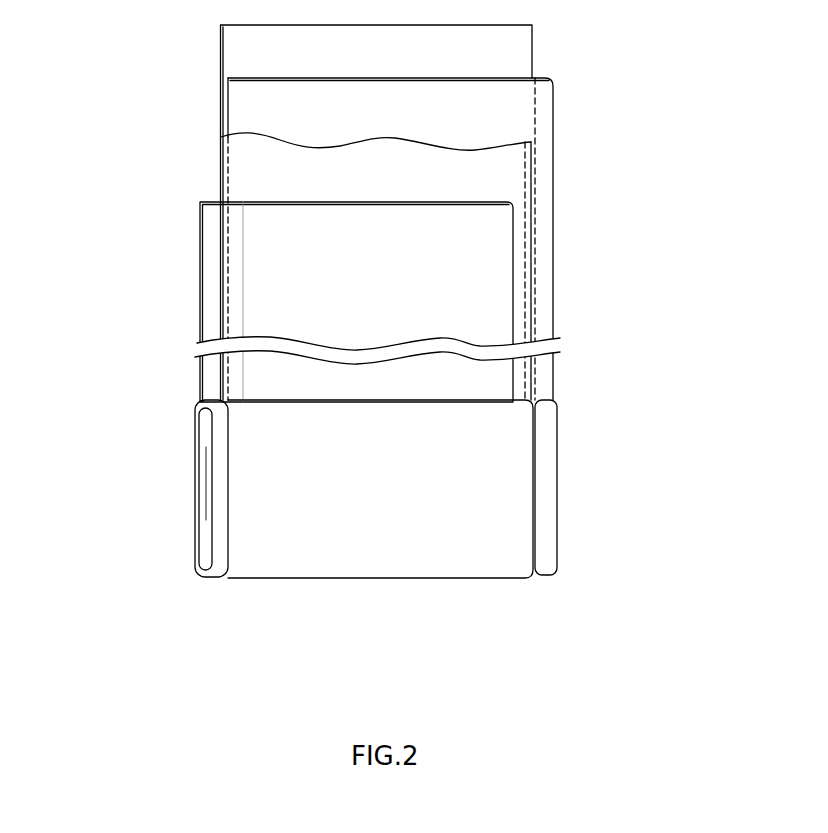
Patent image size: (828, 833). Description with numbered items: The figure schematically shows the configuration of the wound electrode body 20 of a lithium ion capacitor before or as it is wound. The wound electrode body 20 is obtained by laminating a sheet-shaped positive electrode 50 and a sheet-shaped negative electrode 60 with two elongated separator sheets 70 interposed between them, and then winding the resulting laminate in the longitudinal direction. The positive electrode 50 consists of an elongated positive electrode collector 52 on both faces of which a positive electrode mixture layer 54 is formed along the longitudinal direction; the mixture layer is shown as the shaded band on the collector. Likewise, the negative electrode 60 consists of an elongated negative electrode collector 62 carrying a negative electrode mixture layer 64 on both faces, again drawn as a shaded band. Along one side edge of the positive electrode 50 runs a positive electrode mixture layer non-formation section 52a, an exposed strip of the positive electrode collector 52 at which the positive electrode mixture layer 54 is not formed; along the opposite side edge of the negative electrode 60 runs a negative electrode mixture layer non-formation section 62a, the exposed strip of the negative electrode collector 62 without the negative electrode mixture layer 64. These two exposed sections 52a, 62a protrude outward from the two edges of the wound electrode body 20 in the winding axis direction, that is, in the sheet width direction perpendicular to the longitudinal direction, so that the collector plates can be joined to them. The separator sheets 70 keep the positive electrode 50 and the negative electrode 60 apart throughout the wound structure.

The wound electrode body 20 is at (434, 560).
The positive electrode 50 is at (294, 389).
The positive electrode collector 52 is at (197, 330).
The positive electrode mixture layer non-formation section 52a is at (218, 480).
The positive electrode mixture layer 54 is at (255, 220).
The negative electrode 60 is at (444, 324).
The negative electrode collector 62 is at (553, 245).
The negative electrode mixture layer non-formation section 62a is at (540, 217).
The negative electrode mixture layer 64 is at (520, 100).
The separator sheet 70 is at (240, 43).